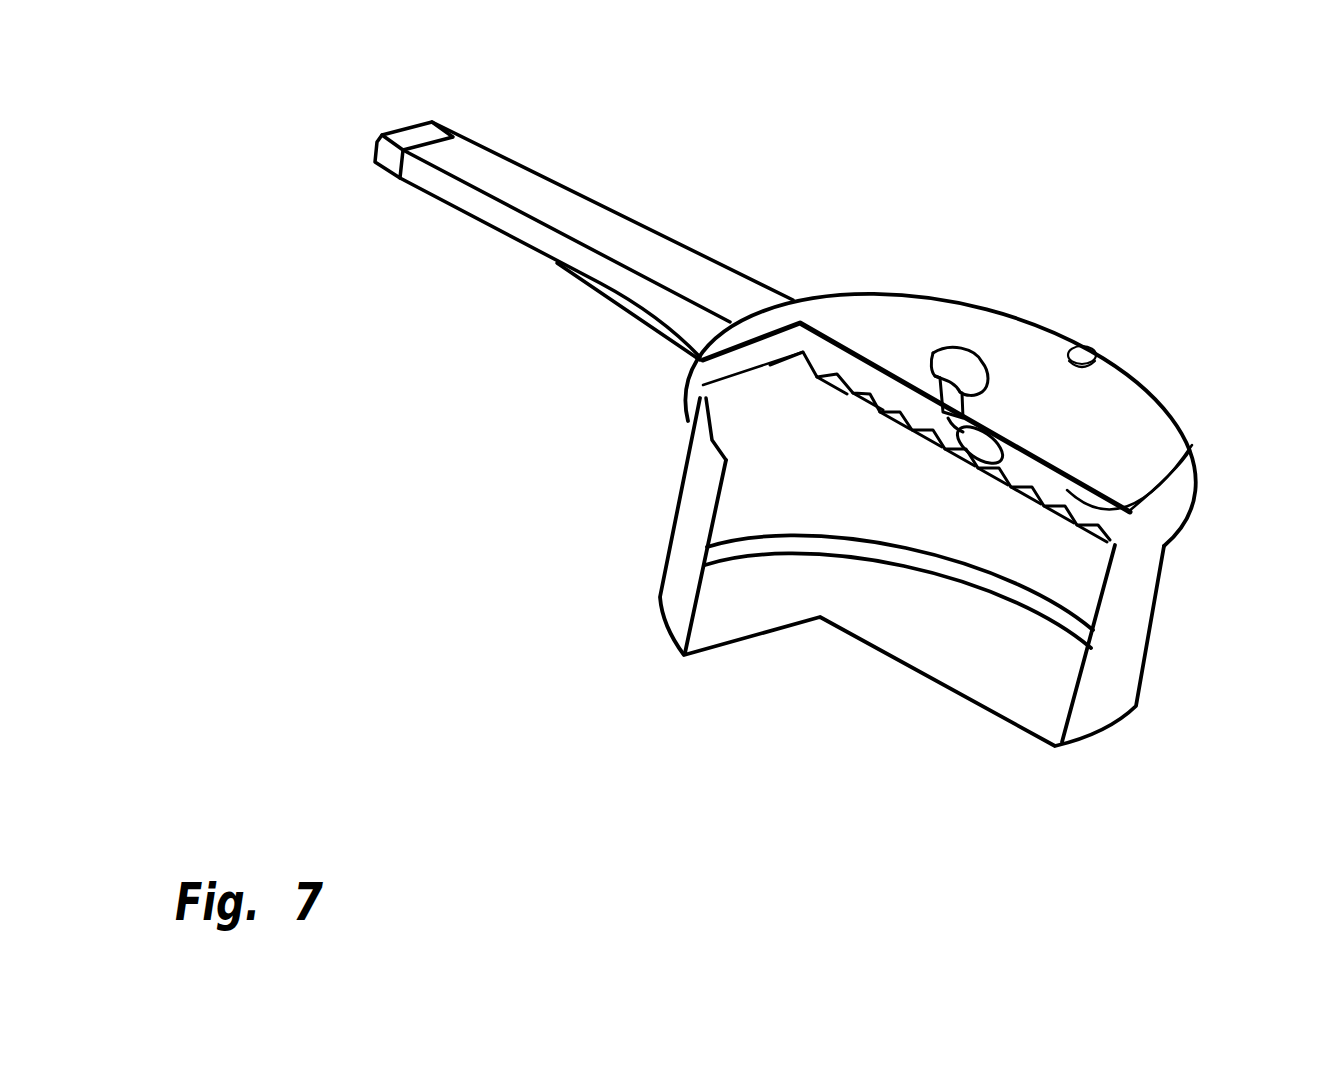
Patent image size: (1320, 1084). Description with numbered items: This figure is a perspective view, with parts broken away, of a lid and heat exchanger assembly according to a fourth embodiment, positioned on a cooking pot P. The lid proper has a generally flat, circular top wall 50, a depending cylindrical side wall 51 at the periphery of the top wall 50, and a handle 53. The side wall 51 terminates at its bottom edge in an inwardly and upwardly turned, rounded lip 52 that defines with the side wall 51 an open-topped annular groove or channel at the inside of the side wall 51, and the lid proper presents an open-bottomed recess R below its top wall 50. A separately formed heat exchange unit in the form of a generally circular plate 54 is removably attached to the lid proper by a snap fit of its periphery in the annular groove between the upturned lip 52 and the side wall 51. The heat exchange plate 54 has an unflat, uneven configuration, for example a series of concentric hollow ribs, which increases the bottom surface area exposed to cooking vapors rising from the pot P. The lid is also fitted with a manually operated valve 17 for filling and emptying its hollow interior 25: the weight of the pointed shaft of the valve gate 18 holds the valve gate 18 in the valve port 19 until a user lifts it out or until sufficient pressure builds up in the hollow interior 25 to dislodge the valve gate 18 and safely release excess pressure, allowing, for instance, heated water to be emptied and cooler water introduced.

The handle 53 is at (484, 158).
The manually operated valve 17 is at (938, 320).
The top wall 50 is at (1031, 333).
The valve gate 18 is at (931, 357).
The valve port 19 is at (945, 418).
The open-bottomed recess R is at (1064, 460).
The hollow interior 25 is at (1185, 447).
The cylindrical side wall 51 is at (1150, 532).
The rounded lip 52 is at (704, 405).
The heat exchange plate 54 is at (868, 402).
The cooking pot P is at (1120, 647).